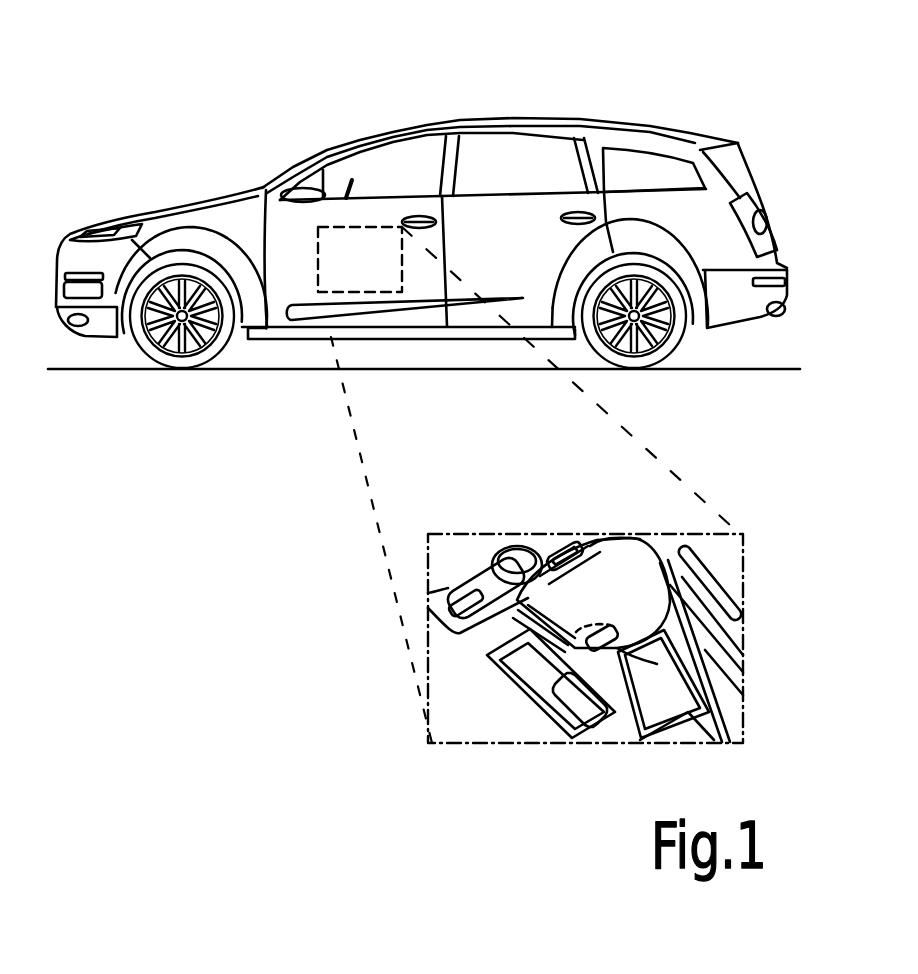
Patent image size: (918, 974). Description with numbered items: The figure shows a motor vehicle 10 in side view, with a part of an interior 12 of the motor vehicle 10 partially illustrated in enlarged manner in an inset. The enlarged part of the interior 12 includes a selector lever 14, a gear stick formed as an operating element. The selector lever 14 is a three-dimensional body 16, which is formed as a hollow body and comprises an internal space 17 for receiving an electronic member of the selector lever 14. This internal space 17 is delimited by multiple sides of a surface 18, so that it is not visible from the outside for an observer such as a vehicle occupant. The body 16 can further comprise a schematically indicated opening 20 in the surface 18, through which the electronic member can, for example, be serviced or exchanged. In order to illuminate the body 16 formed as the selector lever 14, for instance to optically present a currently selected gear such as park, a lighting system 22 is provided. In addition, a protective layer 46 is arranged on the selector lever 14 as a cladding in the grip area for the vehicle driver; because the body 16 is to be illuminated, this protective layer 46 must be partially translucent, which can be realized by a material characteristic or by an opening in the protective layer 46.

The motor vehicle 10 is at (688, 133).
The interior 12 is at (377, 273).
The selector lever 14 is at (756, 651).
The three-dimensional body 16 is at (687, 598).
The internal space 17 is at (624, 614).
The surface 18 is at (603, 570).
The opening 20 is at (567, 663).
The lighting system 22 is at (622, 690).
The protective layer 46 is at (557, 603).